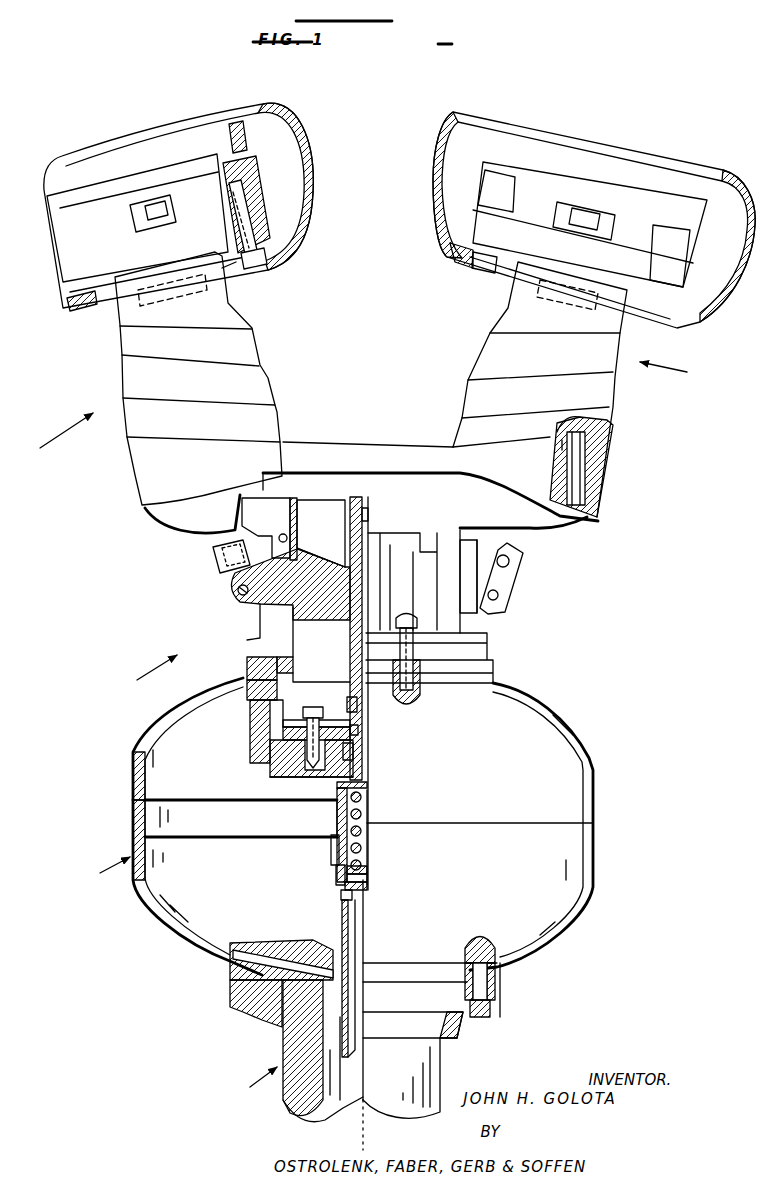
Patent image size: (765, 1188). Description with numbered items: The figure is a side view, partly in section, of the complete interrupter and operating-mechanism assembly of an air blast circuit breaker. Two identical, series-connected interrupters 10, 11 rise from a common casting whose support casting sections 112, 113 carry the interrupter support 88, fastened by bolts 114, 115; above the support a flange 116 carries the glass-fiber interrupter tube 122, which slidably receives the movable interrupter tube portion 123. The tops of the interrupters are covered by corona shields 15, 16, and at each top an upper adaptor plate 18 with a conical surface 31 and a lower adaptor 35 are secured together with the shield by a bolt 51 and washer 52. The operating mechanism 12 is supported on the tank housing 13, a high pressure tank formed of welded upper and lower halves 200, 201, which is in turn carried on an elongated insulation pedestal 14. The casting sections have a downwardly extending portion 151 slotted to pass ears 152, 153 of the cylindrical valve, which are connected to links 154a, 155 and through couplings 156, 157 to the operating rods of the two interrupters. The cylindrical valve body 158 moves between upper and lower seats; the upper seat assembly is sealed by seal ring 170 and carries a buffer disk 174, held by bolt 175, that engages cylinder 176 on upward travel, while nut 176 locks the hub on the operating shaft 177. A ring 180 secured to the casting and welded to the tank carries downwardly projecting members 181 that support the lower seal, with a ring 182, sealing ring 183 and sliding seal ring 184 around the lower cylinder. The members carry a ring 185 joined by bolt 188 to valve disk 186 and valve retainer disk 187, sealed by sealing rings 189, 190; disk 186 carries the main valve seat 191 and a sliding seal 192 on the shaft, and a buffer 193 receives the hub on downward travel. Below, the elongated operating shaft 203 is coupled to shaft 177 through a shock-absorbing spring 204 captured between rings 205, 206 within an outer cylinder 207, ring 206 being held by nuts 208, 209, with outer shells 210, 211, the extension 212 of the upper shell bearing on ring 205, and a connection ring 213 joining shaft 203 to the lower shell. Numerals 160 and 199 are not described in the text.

The interrupter 10 is at (30, 460).
The interrupter 11 is at (718, 384).
The operating mechanism 12 is at (106, 687).
The tank housing 13 is at (78, 872).
The insulation pedestal 14 is at (363, 1029).
The corona shield 15 is at (305, 171).
The corona shield 16 is at (434, 156).
The upper adaptor plate 18 is at (258, 176).
The conical surface 31 is at (104, 195).
The lower adaptor 35 is at (250, 222).
The bolt 51 is at (258, 264).
The washer 52 is at (238, 268).
The interrupter support 88 is at (282, 425).
The support casting section 112 is at (163, 523).
The support casting section 113 is at (325, 490).
The bolt 114 is at (573, 440).
The bolt 115 is at (613, 427).
The flange 116 is at (125, 428).
The interrupter tube 122 is at (117, 378).
The movable interrupter tube portion 123 is at (112, 318).
The downwardly extending portion 151 is at (432, 540).
The ear 152 is at (257, 613).
The ear 153 is at (483, 608).
The link 154a is at (252, 578).
The link 155 is at (512, 590).
The coupling 156 is at (220, 563).
The coupling 157 is at (520, 568).
The cylindrical valve body 158 is at (297, 520).
The plate edge 160 is at (341, 562).
The seal ring 170 is at (287, 530).
The buffer disk 174 is at (356, 510).
The bolt 175 is at (368, 513).
The nut 176 is at (297, 530).
The operating shaft 177 is at (393, 677).
The ring 180 is at (247, 667).
The downwardly projecting members 181 is at (250, 727).
The ring 182 is at (247, 650).
The sealing ring 183 is at (250, 697).
The sliding seal ring 184 is at (289, 664).
The ring 185 is at (250, 758).
The valve disk 186 is at (355, 745).
The valve retainer disk 187 is at (358, 730).
The bolt 188 is at (322, 708).
The sealing ring 189 is at (283, 775).
The sealing ring 190 is at (357, 757).
The main valve seat 191 is at (307, 723).
The sliding seal 192 is at (360, 737).
The buffer 193 is at (358, 703).
The inlet block 199 is at (320, 955).
The upper half 200 is at (133, 747).
The lower half 201 is at (178, 935).
The elongated operating shaft 203 is at (350, 957).
The spring 204 is at (367, 810).
The ring 205 is at (362, 798).
The ring 206 is at (365, 853).
The outer cylinder 207 is at (335, 843).
The nut 208 is at (366, 867).
The nut 209 is at (366, 882).
The outer shell 210 is at (337, 805).
The outer shell 211 is at (338, 868).
The extension 212 is at (337, 784).
The connection ring 213 is at (340, 888).